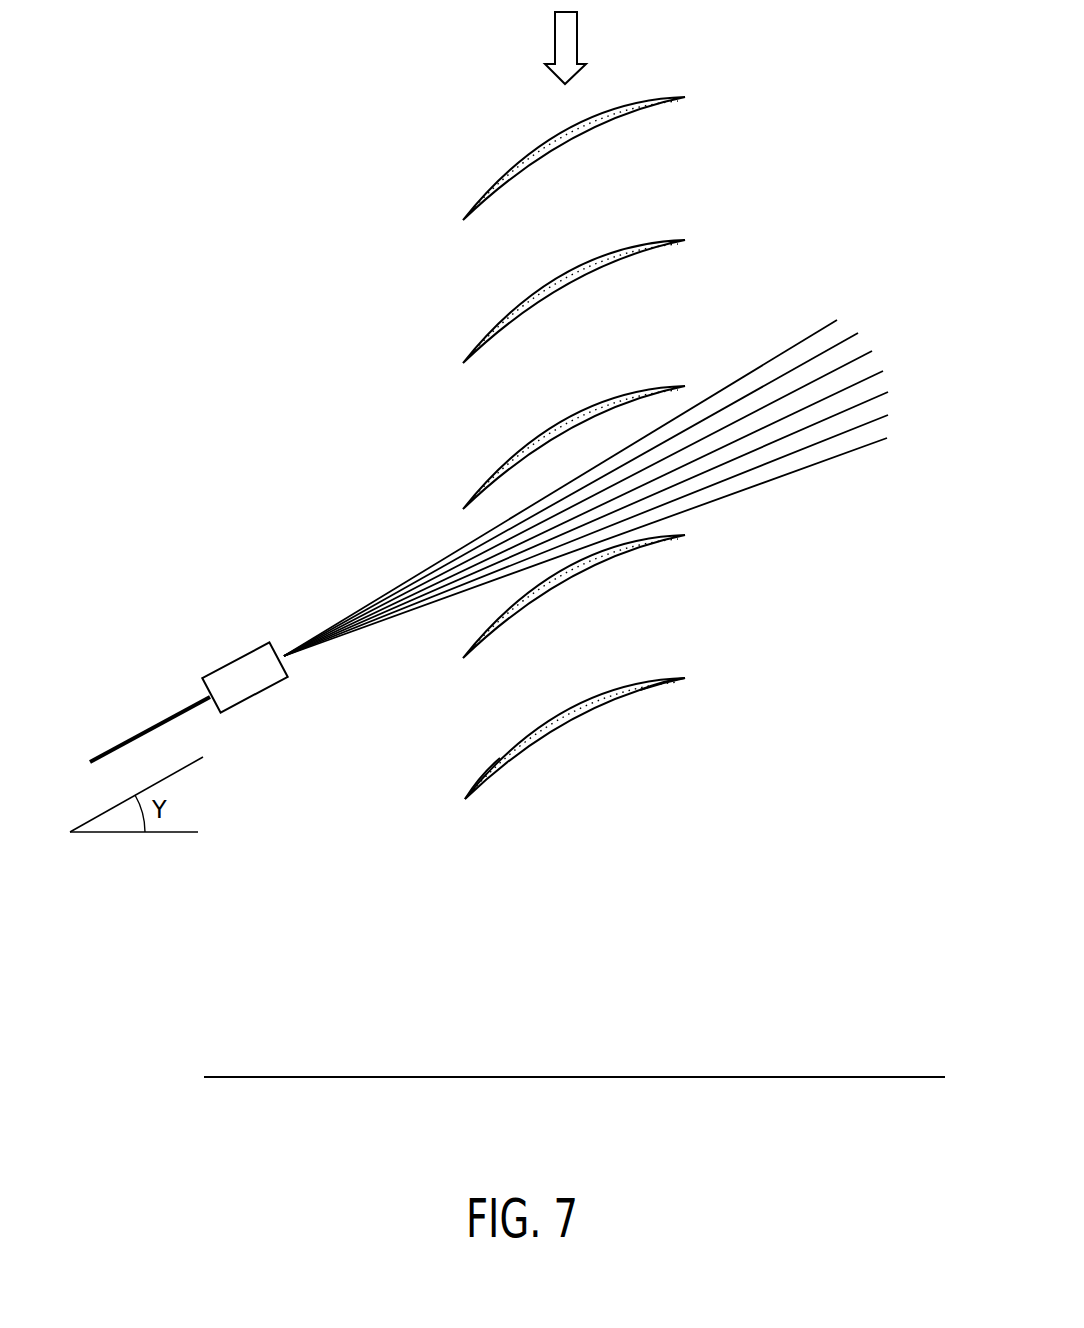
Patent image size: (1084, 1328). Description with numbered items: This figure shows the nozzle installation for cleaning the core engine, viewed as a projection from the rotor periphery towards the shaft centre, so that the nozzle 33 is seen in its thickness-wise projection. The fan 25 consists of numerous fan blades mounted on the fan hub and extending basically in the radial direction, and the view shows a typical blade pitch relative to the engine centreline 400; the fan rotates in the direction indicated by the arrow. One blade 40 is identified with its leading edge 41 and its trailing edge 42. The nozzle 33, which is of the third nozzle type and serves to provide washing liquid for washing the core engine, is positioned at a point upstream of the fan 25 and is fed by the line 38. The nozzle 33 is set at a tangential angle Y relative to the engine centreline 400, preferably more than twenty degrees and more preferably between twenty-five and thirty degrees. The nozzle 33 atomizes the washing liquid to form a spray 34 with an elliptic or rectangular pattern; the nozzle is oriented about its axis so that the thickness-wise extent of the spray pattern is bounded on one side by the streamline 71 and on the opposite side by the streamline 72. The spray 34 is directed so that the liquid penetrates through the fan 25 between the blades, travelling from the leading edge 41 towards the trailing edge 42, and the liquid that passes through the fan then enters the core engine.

The fan 25 is at (678, 877).
The nozzle 33 is at (238, 667).
The spray 34 is at (585, 520).
The optical fiber 38 is at (155, 718).
The blade 40 is at (567, 733).
The leading edge 41 is at (470, 796).
The trailing edge 42 is at (688, 678).
The streamline 71 is at (430, 565).
The streamline 72 is at (403, 615).
The engine centreline 400 is at (797, 1075).